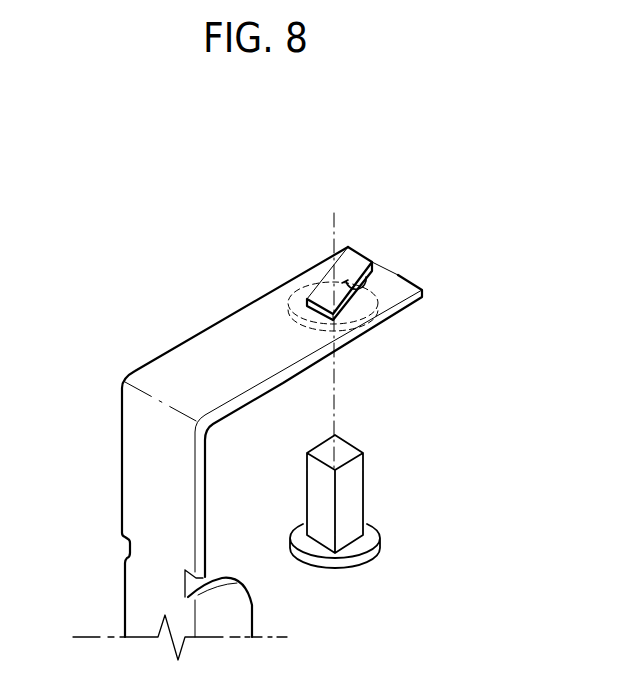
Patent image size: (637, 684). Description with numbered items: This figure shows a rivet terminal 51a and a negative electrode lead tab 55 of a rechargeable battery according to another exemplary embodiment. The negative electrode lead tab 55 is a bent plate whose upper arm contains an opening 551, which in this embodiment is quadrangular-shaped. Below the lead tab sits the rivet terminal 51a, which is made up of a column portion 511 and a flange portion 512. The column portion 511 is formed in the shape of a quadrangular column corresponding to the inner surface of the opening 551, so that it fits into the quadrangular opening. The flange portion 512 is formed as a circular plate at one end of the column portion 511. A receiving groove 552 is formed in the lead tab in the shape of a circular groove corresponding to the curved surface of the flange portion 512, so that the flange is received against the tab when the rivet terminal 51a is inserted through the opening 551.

The negative electrode lead tab 55 is at (110, 398).
The opening 551 is at (313, 295).
The receiving groove 552 is at (362, 277).
The rivet terminal 51a is at (401, 501).
The column portion 511 is at (350, 487).
The flange portion 512 is at (373, 530).